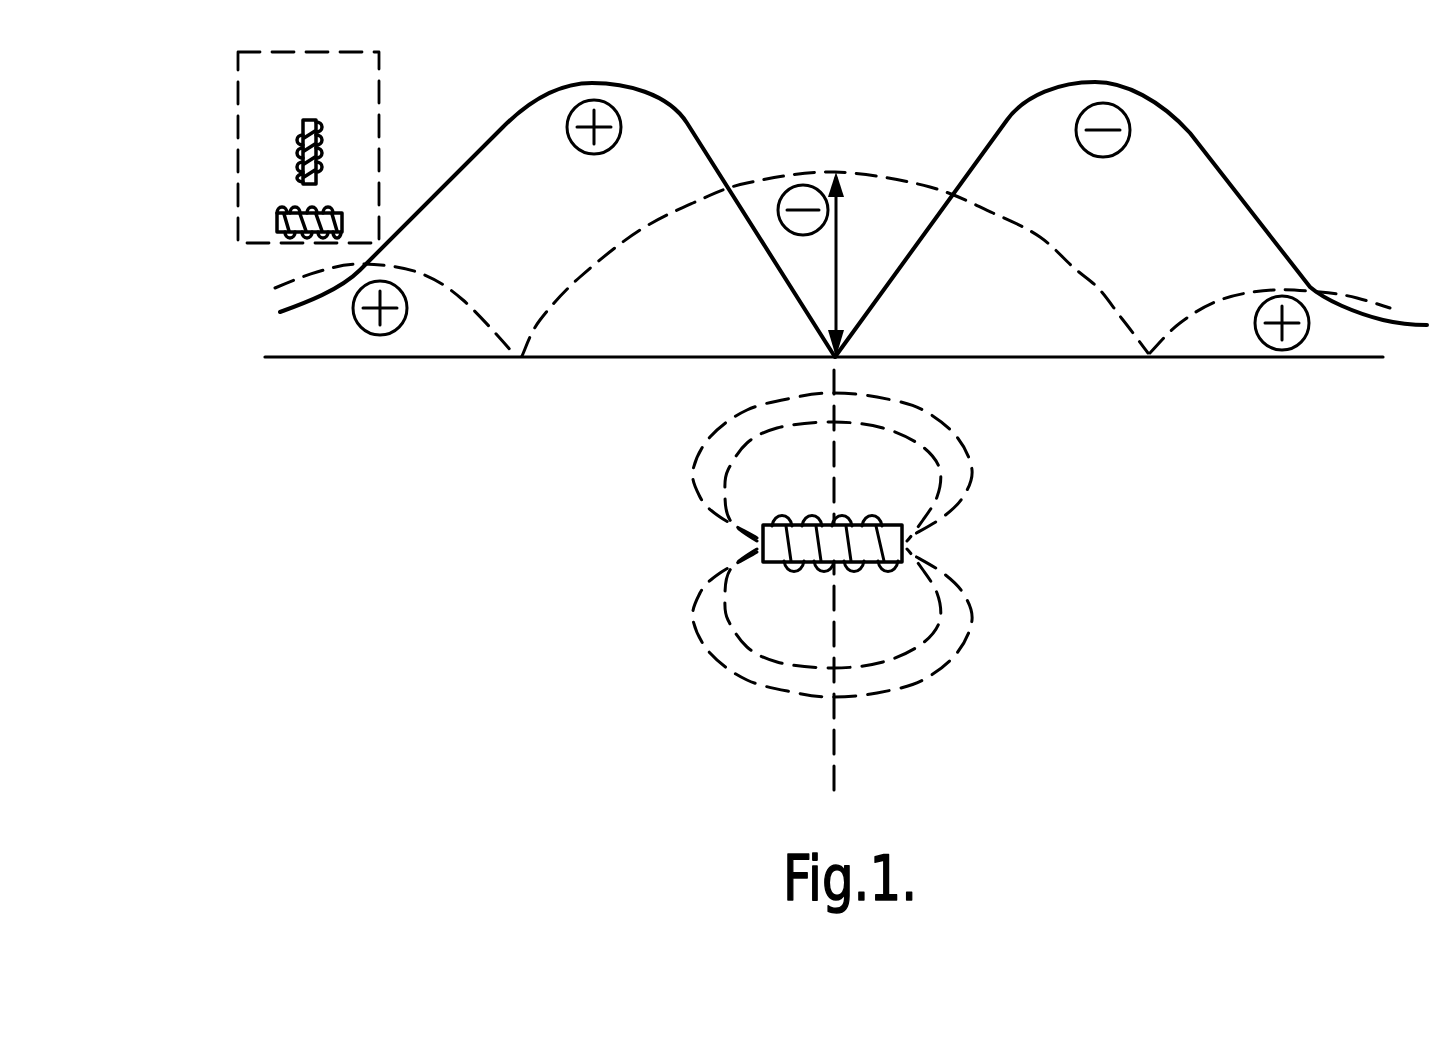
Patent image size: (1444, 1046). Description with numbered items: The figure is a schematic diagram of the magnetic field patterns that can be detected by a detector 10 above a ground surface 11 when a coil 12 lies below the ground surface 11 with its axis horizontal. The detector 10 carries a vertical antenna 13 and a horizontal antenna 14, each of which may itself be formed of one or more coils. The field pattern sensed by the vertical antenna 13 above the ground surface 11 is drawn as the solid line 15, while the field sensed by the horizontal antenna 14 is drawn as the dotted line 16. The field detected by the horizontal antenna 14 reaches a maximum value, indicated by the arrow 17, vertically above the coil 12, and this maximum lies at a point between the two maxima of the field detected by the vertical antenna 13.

The detector 10 is at (379, 123).
The ground surface 11 is at (1343, 359).
The coil 12 is at (908, 545).
The vertical antenna 13 is at (300, 161).
The horizontal antenna 14 is at (308, 234).
The solid line 15 is at (683, 123).
The dotted line 16 is at (1098, 282).
The arrow 17 is at (838, 253).